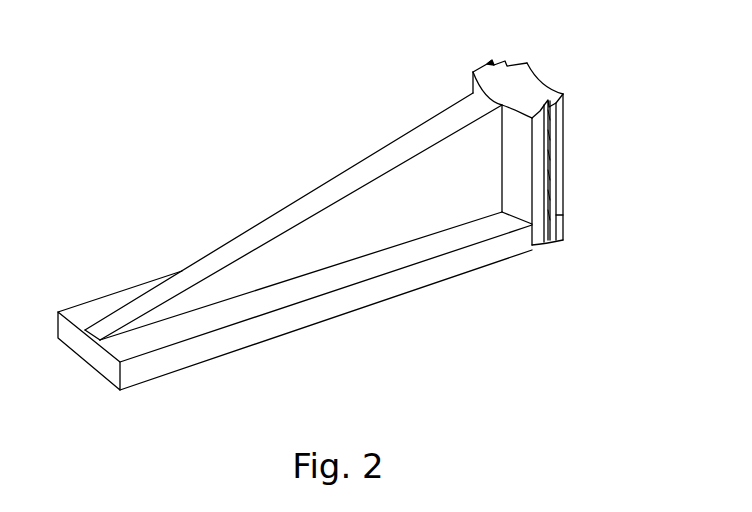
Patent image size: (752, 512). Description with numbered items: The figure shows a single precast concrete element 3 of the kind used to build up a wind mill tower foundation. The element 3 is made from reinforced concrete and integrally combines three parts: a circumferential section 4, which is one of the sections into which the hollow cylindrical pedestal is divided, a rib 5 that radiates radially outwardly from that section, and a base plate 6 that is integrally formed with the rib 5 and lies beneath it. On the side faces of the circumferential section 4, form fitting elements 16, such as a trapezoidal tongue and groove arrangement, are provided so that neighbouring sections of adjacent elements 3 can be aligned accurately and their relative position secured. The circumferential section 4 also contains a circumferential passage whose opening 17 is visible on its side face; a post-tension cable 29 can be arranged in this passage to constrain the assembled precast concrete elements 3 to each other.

The precast concrete element 3 is at (165, 188).
The circumferential section 4 is at (520, 92).
The rib 5 is at (378, 207).
The base plate 6 is at (368, 268).
The form fitting element 16 is at (500, 60).
The opening of the passage 17 is at (560, 210).
The post-tension cable 29 is at (566, 216).